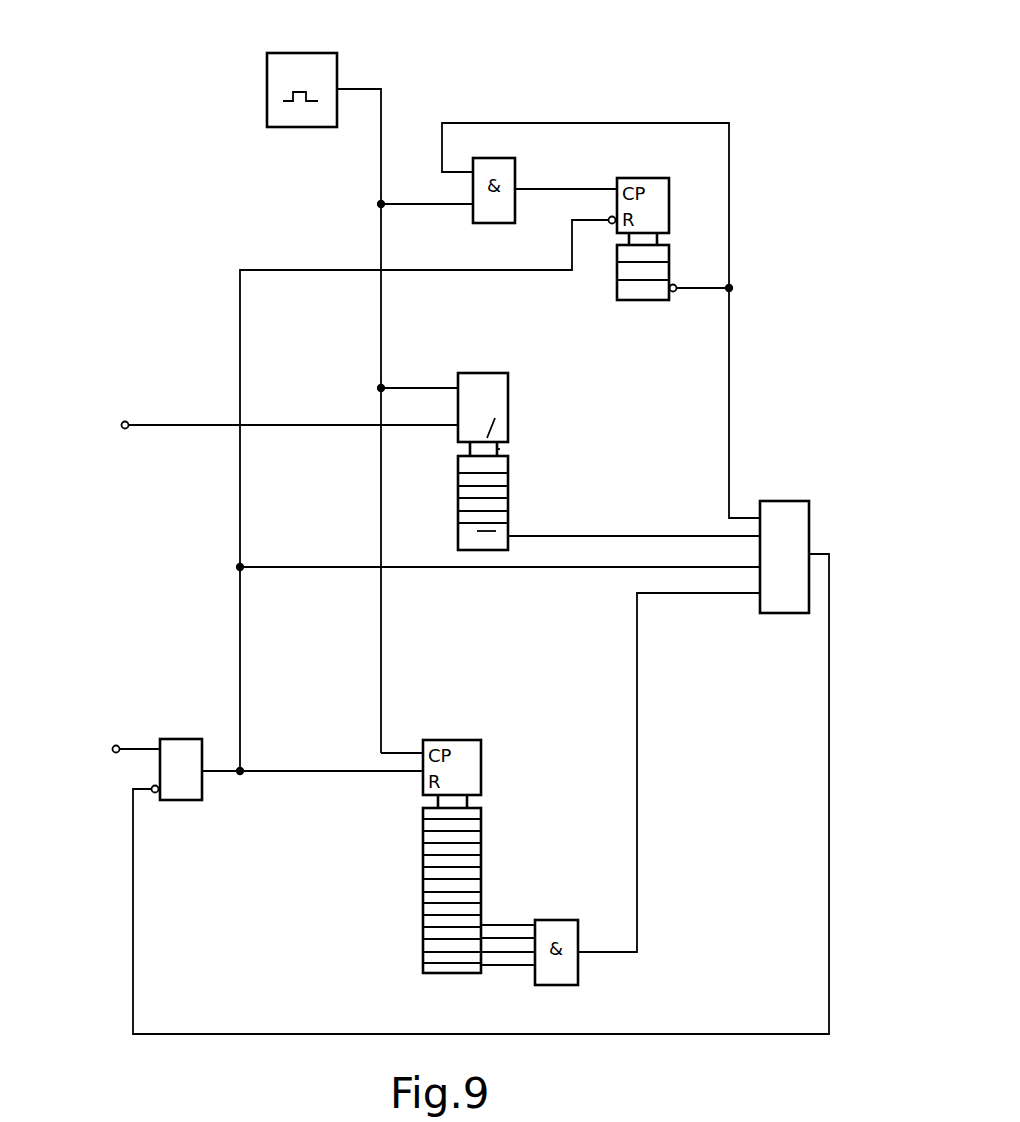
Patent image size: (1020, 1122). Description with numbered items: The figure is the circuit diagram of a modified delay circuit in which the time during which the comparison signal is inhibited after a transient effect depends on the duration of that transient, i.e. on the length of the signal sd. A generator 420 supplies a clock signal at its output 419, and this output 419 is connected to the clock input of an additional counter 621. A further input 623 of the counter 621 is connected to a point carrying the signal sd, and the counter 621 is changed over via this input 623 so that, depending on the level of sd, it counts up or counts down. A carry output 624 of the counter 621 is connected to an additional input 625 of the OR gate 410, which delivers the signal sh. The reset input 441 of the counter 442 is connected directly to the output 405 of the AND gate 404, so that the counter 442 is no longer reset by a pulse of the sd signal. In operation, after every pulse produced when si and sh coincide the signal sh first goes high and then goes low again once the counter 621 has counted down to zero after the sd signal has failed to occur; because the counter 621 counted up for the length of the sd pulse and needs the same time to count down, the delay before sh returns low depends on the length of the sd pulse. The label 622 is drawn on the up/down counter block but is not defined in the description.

The generator 420 is at (315, 52).
The output of the generator 419 is at (338, 93).
The reset input of the counter 441 is at (609, 223).
The counter 442 is at (660, 236).
The up/down counter 622 is at (457, 388).
The further input of the counter 623 is at (458, 433).
The additional counter 621 is at (500, 449).
The carry output of the counter 624 is at (510, 536).
The OR gate 410 is at (792, 501).
The additional input of the OR gate 625 is at (758, 541).
The AND gate 404 is at (186, 740).
The output of the AND gate 405 is at (205, 774).